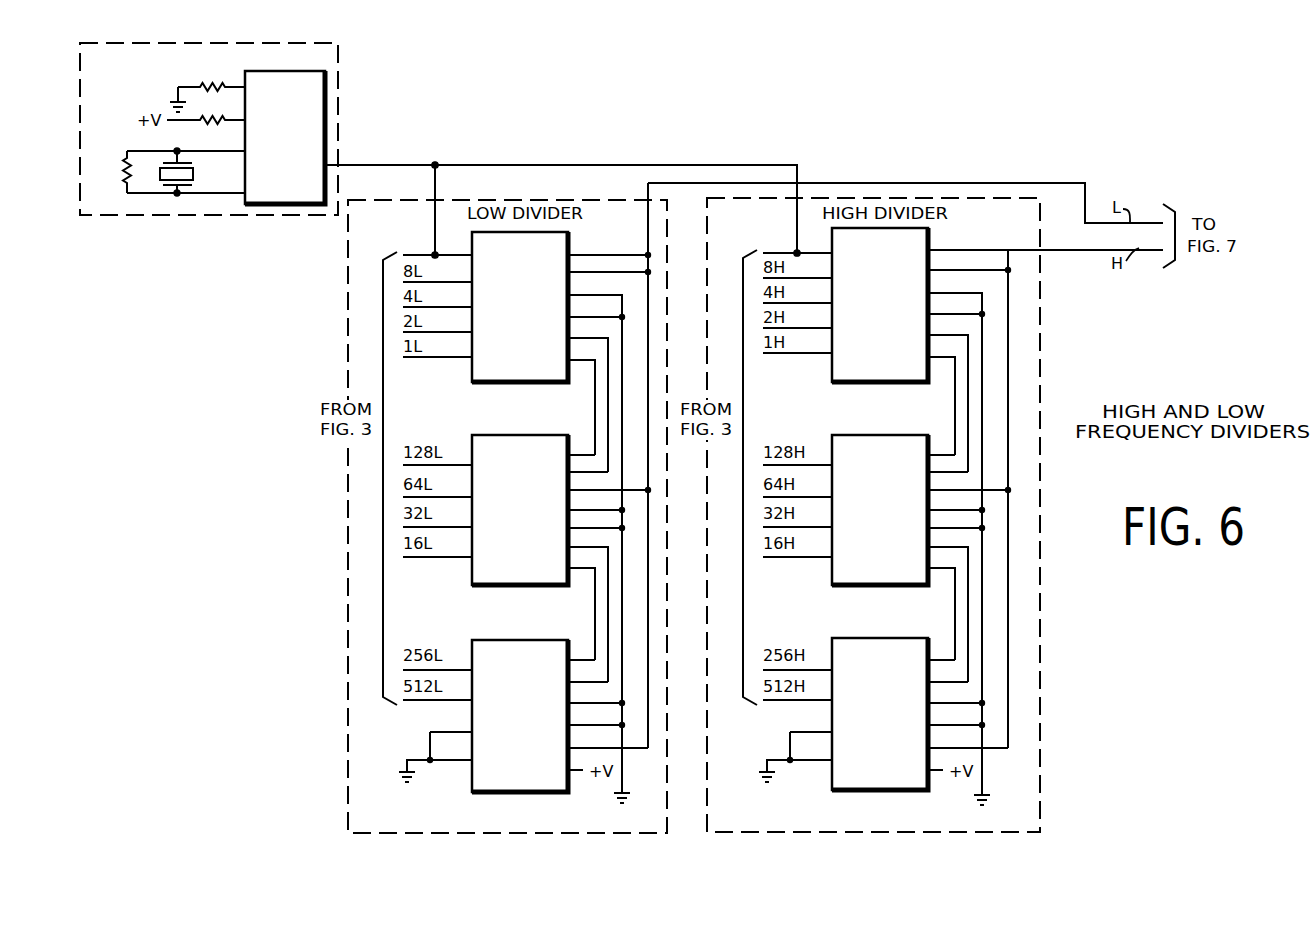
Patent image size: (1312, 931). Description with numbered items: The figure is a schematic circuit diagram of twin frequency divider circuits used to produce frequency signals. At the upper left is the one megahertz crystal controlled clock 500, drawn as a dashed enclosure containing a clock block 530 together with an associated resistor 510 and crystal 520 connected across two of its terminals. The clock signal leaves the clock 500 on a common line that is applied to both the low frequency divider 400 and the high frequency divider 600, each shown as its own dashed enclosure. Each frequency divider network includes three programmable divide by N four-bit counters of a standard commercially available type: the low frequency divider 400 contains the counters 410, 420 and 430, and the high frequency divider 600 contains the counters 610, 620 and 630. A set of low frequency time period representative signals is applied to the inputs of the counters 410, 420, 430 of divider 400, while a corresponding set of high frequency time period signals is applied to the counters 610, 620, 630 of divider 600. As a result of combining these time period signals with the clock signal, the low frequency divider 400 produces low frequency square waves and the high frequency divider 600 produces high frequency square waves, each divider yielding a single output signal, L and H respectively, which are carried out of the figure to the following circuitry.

The 1 MHz crystal controlled clock 500 is at (317, 42).
The resistor 510 is at (110, 172).
The crystal 520 is at (193, 174).
The 1 MHz clock 530 is at (259, 71).
The low frequency divider 400 is at (347, 790).
The low divider first counter stage 410 is at (538, 317).
The low divider second counter stage 420 is at (538, 518).
The low divider third counter stage 430 is at (538, 718).
The high frequency divider 600 is at (1040, 764).
The high divider first counter stage 610 is at (898, 315).
The high divider second counter stage 620 is at (898, 518).
The high divider third counter stage 630 is at (898, 716).